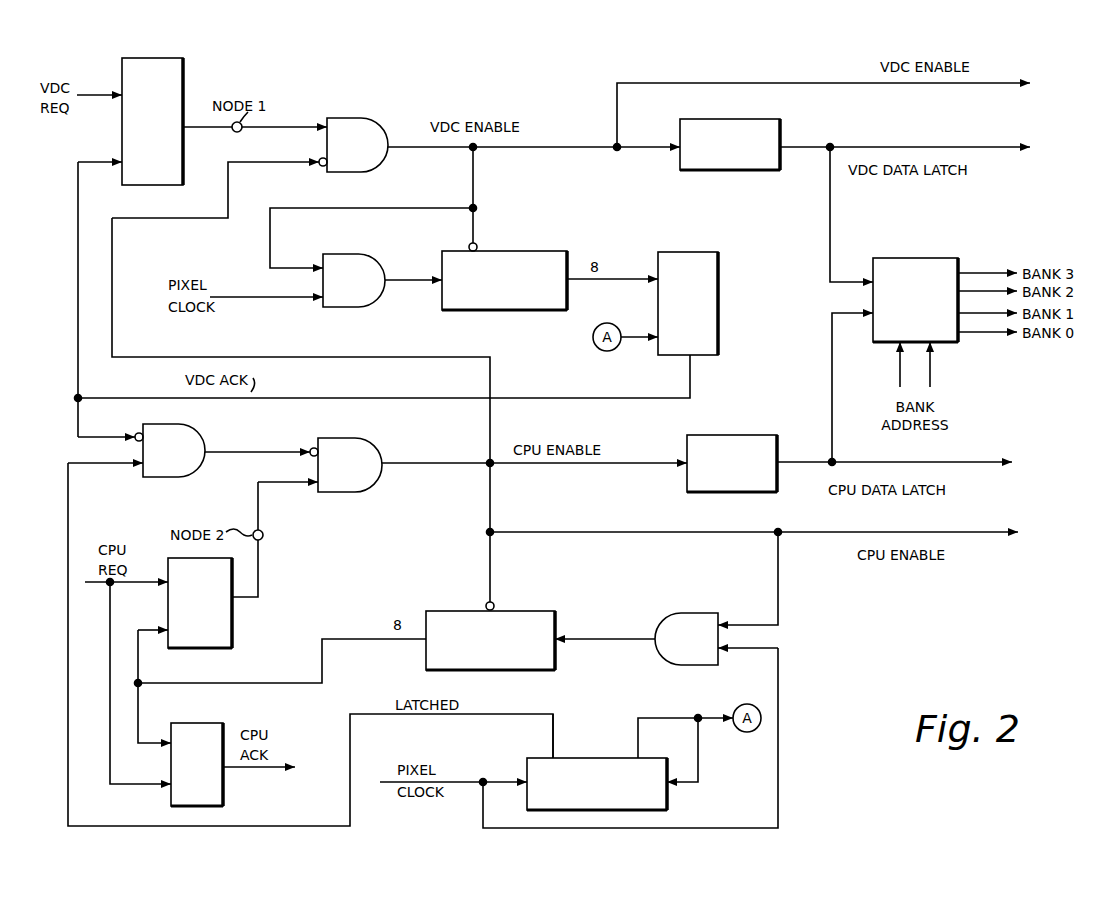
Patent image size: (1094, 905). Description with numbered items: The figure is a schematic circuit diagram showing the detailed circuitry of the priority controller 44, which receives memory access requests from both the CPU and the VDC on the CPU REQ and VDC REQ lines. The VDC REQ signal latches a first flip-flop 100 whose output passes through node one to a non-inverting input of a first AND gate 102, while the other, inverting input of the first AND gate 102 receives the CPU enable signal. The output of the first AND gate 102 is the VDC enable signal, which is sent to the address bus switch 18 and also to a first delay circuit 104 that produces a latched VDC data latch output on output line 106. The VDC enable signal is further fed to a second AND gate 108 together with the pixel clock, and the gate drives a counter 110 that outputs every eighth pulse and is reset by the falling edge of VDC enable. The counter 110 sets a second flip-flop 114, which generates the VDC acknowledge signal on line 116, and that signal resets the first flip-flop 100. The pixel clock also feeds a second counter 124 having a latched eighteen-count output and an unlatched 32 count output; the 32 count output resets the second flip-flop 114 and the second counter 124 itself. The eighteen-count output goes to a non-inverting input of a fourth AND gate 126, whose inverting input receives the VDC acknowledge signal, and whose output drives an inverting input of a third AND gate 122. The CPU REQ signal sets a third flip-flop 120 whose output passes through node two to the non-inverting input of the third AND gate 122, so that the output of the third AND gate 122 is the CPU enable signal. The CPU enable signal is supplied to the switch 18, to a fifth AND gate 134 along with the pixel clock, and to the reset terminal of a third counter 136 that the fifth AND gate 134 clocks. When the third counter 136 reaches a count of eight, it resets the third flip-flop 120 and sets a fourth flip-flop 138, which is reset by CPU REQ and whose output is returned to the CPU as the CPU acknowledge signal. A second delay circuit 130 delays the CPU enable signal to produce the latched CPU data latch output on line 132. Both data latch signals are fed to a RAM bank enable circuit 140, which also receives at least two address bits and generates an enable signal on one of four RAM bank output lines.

The first flip-flop 100 is at (183, 68).
The first AND gate 102 is at (345, 118).
The first delay circuit 104 is at (718, 170).
The output line 106 is at (940, 147).
The second AND gate 108 is at (372, 307).
The counter 110 is at (520, 310).
The second flip-flop 114 is at (718, 268).
The line 116 is at (690, 387).
The third flip-flop 120 is at (232, 632).
The third AND gate 122 is at (389, 424).
The second counter 124 is at (526, 761).
The fourth AND gate 126 is at (200, 450).
The second delay circuit 130 is at (748, 435).
The line 132 is at (955, 462).
The fifth AND gate 134 is at (690, 613).
The third counter 136 is at (432, 611).
The fourth flip-flop 138 is at (213, 714).
The RAM bank enable circuit 140 is at (905, 258).
The priority controller 44 is at (882, 644).
The address bus switch 18 is at (543, 736).
The 32 count output 32 is at (656, 738).